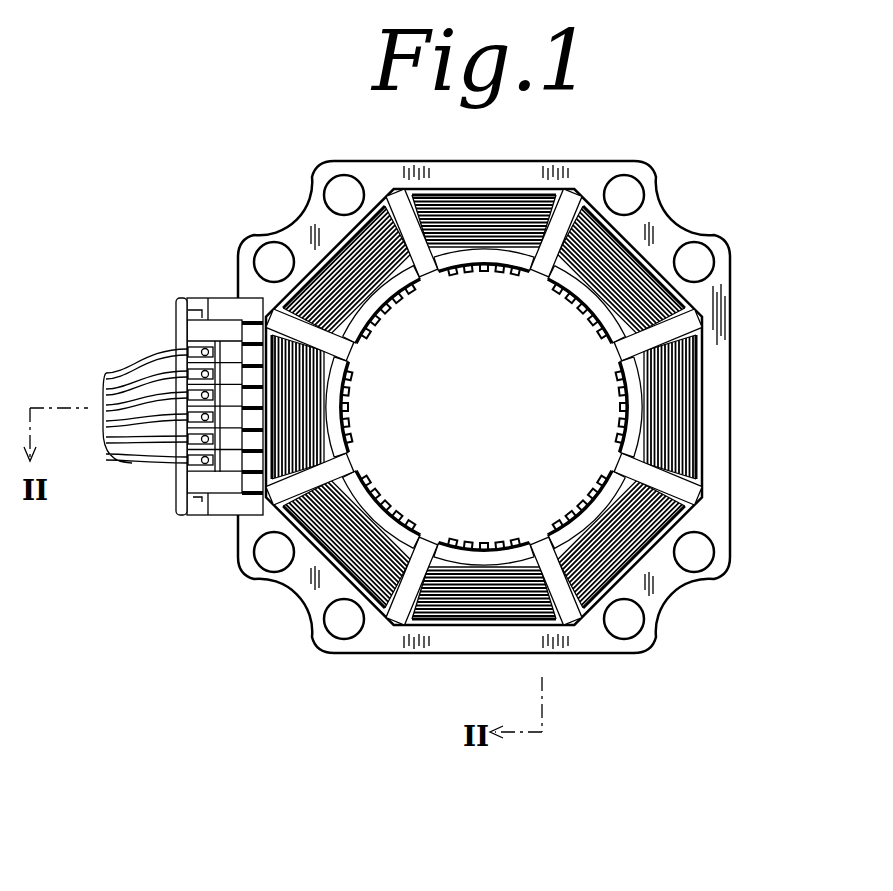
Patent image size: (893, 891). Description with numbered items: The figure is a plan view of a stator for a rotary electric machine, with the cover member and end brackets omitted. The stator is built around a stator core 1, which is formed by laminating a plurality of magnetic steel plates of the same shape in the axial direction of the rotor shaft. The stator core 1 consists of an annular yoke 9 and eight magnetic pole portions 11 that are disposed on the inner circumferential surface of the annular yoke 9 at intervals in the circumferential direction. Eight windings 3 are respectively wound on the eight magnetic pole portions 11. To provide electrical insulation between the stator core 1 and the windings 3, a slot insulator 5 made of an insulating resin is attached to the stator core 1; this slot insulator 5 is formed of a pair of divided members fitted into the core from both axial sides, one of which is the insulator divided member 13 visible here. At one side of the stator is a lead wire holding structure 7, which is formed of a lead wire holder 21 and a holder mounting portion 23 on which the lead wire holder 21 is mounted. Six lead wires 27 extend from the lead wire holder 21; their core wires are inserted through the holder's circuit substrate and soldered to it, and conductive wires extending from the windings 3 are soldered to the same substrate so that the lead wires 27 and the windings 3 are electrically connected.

The stator core 1 is at (434, 437).
The windings 3 is at (325, 263).
The slot insulator 5 is at (707, 422).
The lead wire holding structure 7 is at (203, 336).
The annular yoke 9 is at (713, 363).
The magnetic pole portions 11 is at (387, 300).
The insulator divided member 13 is at (720, 508).
The lead wire holder 21 is at (202, 330).
The holder mounting portion 23 is at (200, 527).
The lead wires 27 is at (108, 363).